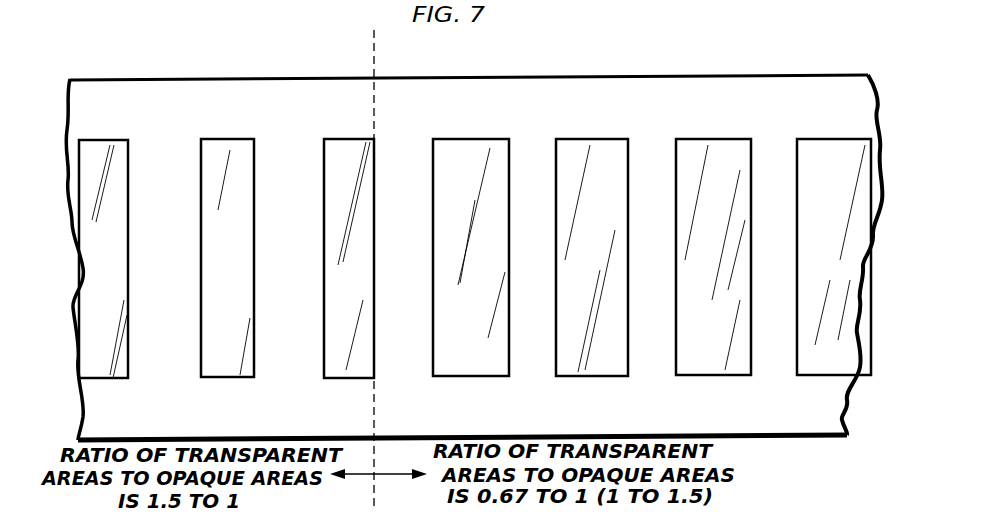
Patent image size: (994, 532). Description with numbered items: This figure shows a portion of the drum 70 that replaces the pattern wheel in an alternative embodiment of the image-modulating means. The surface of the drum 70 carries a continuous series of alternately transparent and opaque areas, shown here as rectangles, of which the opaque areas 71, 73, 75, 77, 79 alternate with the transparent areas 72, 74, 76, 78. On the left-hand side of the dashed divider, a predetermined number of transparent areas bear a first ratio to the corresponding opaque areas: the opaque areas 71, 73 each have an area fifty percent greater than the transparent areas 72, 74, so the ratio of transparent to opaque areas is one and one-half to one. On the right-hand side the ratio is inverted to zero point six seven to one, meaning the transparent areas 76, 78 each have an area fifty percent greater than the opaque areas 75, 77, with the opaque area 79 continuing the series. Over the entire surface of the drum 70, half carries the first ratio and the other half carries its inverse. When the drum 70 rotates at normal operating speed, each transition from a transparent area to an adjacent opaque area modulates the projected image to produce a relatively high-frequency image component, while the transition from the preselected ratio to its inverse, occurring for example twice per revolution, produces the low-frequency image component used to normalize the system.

The drum 70 is at (197, 80).
The opaque area 71 is at (155, 157).
The transparent area 72 is at (223, 148).
The opaque area 73 is at (285, 165).
The transparent area 74 is at (342, 145).
The opaque area 75 is at (403, 155).
The transparent area 76 is at (473, 148).
The opaque area 77 is at (532, 155).
The transparent area 78 is at (608, 148).
The opaque area 79 is at (657, 152).